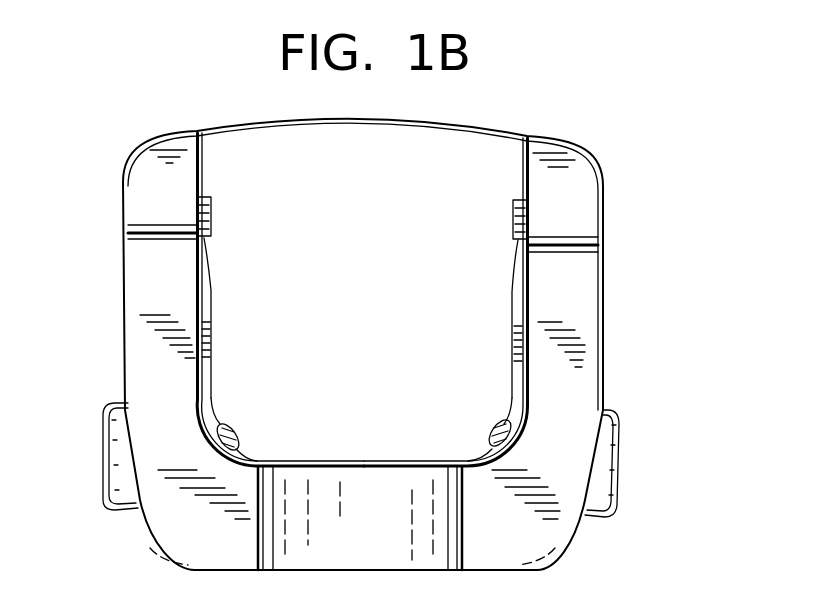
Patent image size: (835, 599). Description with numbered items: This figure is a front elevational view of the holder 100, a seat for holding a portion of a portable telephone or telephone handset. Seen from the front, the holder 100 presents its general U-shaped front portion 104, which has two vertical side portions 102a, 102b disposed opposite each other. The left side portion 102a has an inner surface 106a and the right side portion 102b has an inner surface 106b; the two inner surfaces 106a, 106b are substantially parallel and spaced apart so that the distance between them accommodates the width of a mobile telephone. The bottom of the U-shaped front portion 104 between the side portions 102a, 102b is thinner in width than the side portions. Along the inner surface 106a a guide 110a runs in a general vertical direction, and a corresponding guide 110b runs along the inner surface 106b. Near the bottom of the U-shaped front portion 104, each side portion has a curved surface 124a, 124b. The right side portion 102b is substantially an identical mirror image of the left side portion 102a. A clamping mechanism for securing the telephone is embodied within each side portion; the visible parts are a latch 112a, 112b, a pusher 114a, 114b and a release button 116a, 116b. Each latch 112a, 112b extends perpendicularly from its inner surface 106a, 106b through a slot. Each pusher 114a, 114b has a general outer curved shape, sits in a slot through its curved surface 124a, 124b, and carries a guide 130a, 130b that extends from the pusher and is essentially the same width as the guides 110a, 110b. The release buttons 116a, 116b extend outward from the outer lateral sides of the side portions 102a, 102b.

The holder 100 is at (648, 220).
The left side portion 102a is at (133, 253).
The right side portion 102b is at (585, 350).
The U-shaped front portion 104 is at (560, 558).
The inner surface 106a is at (200, 165).
The inner surface 106b is at (525, 168).
The guide 110a is at (211, 312).
The guide 110b is at (513, 310).
The latch 112a is at (211, 218).
The latch 112b is at (513, 232).
The pusher 114a is at (231, 425).
The pusher 114b is at (490, 449).
The release button 116a is at (107, 468).
The release button 116b is at (622, 453).
The curved surface 124a is at (236, 437).
The curved surface 124b is at (496, 426).
The guide 130a is at (213, 422).
The guide 130b is at (506, 422).